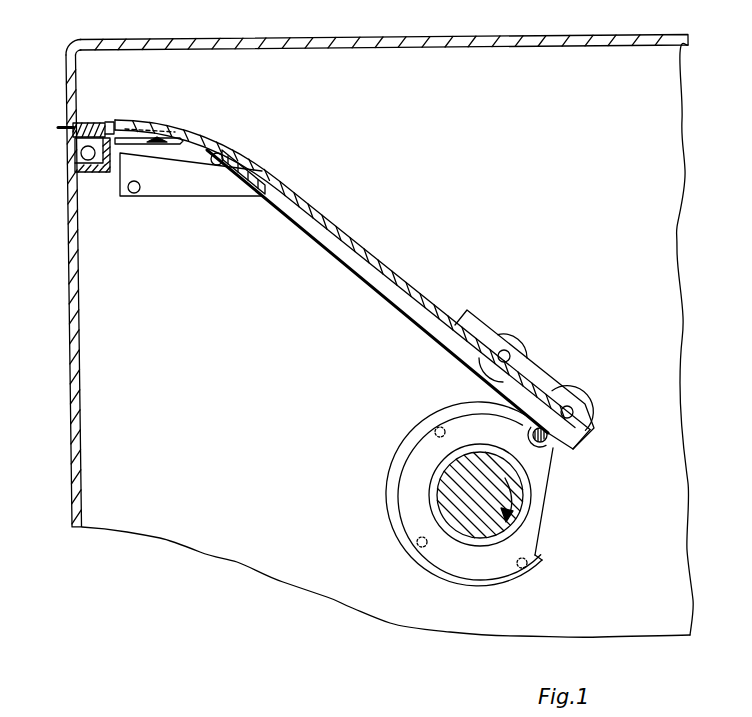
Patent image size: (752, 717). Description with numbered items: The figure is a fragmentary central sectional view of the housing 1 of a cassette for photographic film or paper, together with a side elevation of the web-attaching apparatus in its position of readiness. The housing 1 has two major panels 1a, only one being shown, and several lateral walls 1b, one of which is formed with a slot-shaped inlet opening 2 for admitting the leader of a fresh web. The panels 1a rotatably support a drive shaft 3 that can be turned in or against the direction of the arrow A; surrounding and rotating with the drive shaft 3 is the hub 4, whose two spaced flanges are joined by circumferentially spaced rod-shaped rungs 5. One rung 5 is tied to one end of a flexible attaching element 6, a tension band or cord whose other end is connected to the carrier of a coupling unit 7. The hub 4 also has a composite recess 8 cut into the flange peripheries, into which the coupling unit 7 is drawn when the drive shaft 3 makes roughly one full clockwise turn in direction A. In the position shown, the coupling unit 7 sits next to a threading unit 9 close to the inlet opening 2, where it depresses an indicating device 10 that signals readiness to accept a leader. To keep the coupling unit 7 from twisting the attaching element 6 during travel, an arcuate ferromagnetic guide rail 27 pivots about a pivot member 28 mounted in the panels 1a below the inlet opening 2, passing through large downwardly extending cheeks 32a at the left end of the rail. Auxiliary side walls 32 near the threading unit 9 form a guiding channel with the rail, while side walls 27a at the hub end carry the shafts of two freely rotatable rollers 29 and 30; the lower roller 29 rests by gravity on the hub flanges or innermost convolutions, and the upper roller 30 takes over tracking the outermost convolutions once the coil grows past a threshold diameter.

The housing 1 is at (327, 35).
The major panel 1a is at (219, 377).
The lateral wall 1b is at (473, 47).
The inlet opening 2 is at (62, 130).
The drive shaft 3 is at (455, 505).
The hub 4 is at (410, 493).
The rung 5 is at (434, 432).
The attaching element 6 is at (278, 210).
The coupling unit 7 is at (187, 156).
The composite recess 8 is at (548, 500).
The threading unit 9 is at (96, 183).
The indicating device 10 is at (102, 110).
The guide rail 27 is at (331, 220).
The side wall 27a is at (473, 325).
The pivot member 28 is at (136, 194).
The roller 29 is at (572, 402).
The roller 30 is at (525, 343).
The auxiliary side wall 32 is at (255, 167).
The cheek 32a is at (216, 190).
The arrow A is at (508, 480).